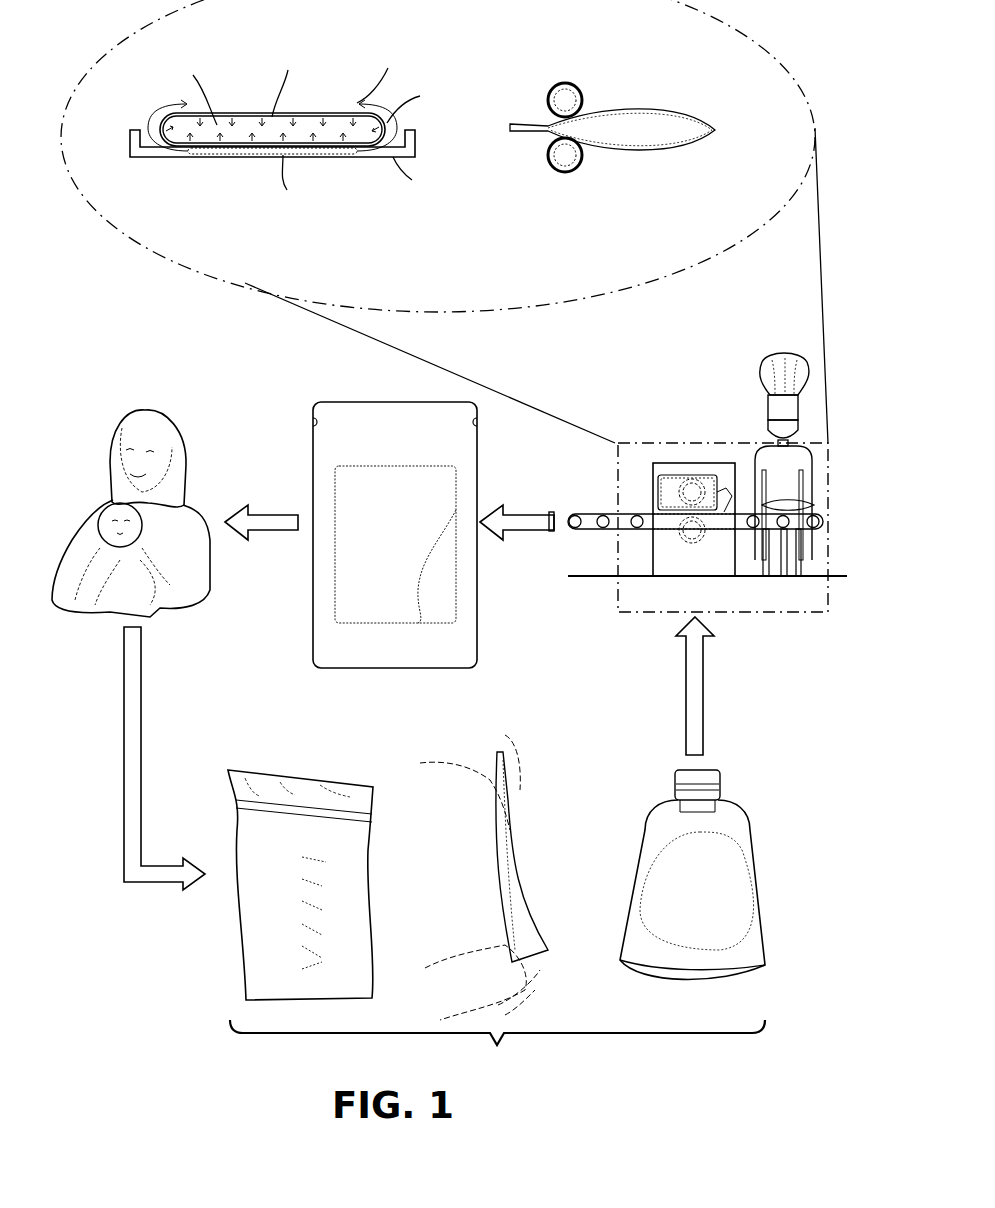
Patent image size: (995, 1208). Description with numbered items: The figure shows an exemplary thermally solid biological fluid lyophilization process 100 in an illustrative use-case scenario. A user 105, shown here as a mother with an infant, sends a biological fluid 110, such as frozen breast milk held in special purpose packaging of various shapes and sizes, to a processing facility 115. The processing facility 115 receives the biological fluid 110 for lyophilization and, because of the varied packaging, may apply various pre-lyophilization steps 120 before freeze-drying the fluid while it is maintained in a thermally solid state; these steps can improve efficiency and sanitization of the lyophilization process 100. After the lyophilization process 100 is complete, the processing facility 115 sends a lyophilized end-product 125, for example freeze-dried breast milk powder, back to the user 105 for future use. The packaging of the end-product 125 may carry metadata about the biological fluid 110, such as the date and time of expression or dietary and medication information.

The thermally solid biological fluid lyophilization process 100 is at (146, 364).
The user 105 is at (183, 458).
The biological fluid 110 is at (496, 903).
The processing facility 115 is at (828, 555).
The pre-lyophilization steps 120 is at (149, 63).
The lyophilized end-product 125 is at (366, 400).